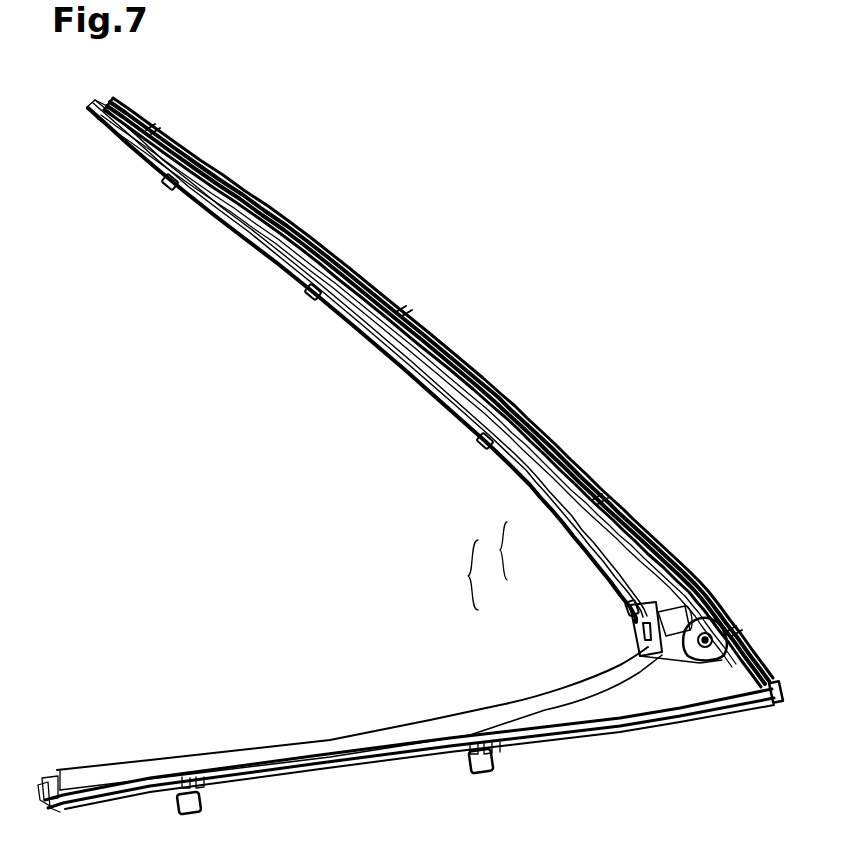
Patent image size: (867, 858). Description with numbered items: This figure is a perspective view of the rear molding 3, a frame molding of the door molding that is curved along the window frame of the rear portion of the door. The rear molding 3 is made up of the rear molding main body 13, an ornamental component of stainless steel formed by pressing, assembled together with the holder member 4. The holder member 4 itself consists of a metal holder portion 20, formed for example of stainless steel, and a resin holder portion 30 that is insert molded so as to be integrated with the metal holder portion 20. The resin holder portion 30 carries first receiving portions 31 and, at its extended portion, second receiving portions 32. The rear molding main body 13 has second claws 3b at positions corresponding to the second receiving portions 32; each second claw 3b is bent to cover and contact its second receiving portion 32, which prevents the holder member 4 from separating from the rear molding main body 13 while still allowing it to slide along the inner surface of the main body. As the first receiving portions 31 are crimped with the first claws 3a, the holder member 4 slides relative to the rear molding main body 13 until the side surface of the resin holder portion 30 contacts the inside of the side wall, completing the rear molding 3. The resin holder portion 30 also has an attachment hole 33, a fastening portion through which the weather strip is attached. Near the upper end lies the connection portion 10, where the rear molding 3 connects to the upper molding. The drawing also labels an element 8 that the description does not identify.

The rear molding 3 is at (464, 575).
The first claws 3a is at (154, 131).
The second claws 3b is at (163, 182).
The holder member 4 is at (495, 551).
The glass run channel 8 is at (382, 336).
The connection portion 10 is at (365, 327).
The rear molding main body 13 is at (530, 690).
The metal holder portion 20 is at (608, 560).
The resin holder portion 30 is at (622, 537).
The first receiving portions 31 is at (150, 124).
The second receiving portions 32 is at (140, 150).
The attachment hole 33 is at (690, 663).